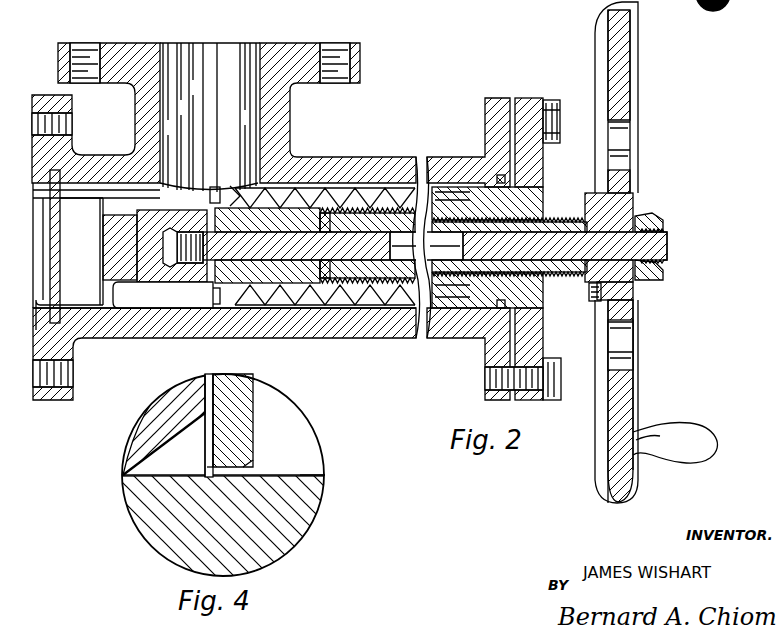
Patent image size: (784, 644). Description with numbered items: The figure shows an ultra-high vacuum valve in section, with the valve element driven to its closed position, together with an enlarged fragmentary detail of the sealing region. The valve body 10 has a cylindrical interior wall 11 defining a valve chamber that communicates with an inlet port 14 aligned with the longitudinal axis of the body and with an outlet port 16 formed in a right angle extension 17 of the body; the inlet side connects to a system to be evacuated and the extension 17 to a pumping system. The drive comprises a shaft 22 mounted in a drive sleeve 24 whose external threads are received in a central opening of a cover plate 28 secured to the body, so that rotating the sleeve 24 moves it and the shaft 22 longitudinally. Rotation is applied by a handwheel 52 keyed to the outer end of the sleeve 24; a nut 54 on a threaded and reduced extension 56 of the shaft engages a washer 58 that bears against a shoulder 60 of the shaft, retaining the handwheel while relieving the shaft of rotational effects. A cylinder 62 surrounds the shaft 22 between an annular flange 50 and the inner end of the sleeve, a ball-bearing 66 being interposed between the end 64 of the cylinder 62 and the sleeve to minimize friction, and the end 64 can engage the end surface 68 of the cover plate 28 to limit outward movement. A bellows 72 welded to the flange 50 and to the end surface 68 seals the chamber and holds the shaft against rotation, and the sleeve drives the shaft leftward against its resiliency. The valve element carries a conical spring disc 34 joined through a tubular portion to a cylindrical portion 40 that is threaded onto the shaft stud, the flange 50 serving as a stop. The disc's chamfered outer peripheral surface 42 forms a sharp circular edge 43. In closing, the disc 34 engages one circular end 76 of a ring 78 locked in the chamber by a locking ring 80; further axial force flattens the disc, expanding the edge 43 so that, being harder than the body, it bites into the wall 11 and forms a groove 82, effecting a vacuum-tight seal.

In FIG. 2, the valve body 10 is at (383, 336).
In FIG. 2, the cylindrical interior wall 11 is at (147, 305).
In FIG. 4, the cylindrical interior wall 11 is at (318, 476).
In FIG. 2, the inlet port 14 is at (78, 348).
In FIG. 2, the outlet port 16 is at (163, 62).
In FIG. 2, the right angle extension 17 is at (284, 57).
In FIG. 2, the shaft 22 is at (577, 242).
In FIG. 2, the drive sleeve 24 is at (396, 196).
In FIG. 2, the cover plate 28 is at (533, 192).
In FIG. 2, the conical spring disc 34 is at (115, 218).
In FIG. 4, the conical spring disc 34 is at (238, 411).
In FIG. 2, the cylindrical portion 40 is at (143, 273).
In FIG. 4, the outer peripheral surface 42 is at (247, 468).
In FIG. 4, the sharp circular edge 43 is at (207, 467).
In FIG. 2, the annular flange 50 is at (210, 295).
In FIG. 2, the handwheel 52 is at (628, 20).
In FIG. 2, the nut 54 is at (660, 226).
In FIG. 2, the threaded and reduced extension 56 is at (667, 246).
In FIG. 2, the washer 58 is at (636, 218).
In FIG. 2, the shoulder 60 is at (634, 282).
In FIG. 2, the cylinder 62 is at (266, 276).
In FIG. 2, the end of cylinder 64 is at (320, 282).
In FIG. 2, the ball-bearing 66 is at (330, 278).
In FIG. 2, the end surface of cover plate 68 is at (460, 296).
In FIG. 2, the bellows 72 is at (304, 190).
In FIG. 2, the circular end of ring 76 is at (98, 212).
In FIG. 4, the circular end of ring 76 is at (207, 392).
In FIG. 2, the ring 78 is at (84, 308).
In FIG. 4, the ring 78 is at (157, 420).
In FIG. 2, the locking ring 80 is at (58, 303).
In FIG. 4, the groove 82 is at (207, 478).